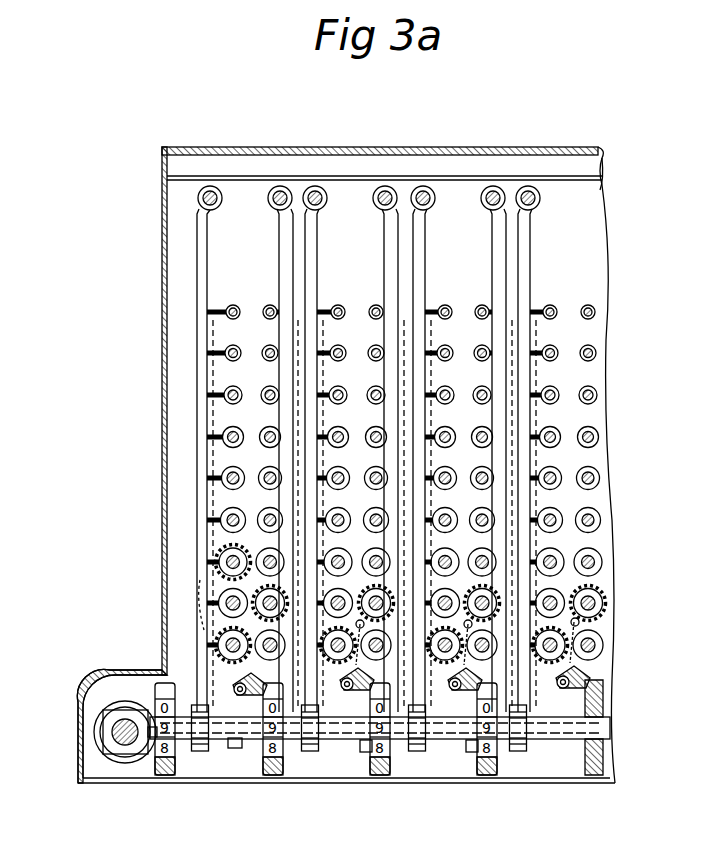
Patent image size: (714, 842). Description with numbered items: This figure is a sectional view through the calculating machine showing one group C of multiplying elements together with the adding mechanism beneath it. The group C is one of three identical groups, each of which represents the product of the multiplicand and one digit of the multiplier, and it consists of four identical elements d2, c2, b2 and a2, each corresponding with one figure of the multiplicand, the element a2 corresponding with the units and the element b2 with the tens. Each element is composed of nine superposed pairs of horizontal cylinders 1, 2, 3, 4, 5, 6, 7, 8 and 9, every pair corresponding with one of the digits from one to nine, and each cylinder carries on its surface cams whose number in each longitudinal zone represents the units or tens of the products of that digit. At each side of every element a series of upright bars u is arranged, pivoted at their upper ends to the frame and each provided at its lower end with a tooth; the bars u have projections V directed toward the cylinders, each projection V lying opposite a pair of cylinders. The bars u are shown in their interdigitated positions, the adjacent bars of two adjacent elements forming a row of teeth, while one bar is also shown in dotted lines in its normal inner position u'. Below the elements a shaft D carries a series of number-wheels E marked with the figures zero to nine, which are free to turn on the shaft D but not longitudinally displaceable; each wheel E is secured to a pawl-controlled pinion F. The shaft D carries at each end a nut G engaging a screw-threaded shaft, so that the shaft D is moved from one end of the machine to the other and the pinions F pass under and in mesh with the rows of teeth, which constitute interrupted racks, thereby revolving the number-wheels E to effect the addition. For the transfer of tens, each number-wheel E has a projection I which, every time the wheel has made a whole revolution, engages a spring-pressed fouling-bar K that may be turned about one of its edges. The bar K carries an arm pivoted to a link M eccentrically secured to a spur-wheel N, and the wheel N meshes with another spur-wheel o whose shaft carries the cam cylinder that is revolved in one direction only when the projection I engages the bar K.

The group C is at (346, 465).
The element d2 is at (247, 449).
The element c2 is at (353, 449).
The element b2 is at (461, 449).
The element a2 is at (551, 449).
The projection V is at (547, 306).
The pair of horizontal cylinders 1 is at (345, 306).
The pair of horizontal cylinders 2 is at (401, 346).
The pair of horizontal cylinders 3 is at (402, 387).
The pair of horizontal cylinders 4 is at (403, 427).
The pair of horizontal cylinders 5 is at (403, 471).
The pair of horizontal cylinders 6 is at (404, 512).
The pair of horizontal cylinders 7 is at (404, 554).
The pair of horizontal cylinders 8 is at (405, 596).
The pair of horizontal cylinders 9 is at (622, 650).
The spur-wheel o is at (236, 555).
The upright bar u is at (429, 596).
The spur-wheel N is at (389, 640).
The link M is at (216, 640).
The fouling-bar K is at (250, 700).
The normal inner position of bar u' is at (459, 664).
The number-wheel E is at (285, 776).
The shaft D is at (188, 729).
The projection I is at (262, 700).
The pinion F is at (310, 750).
The nut G is at (135, 752).